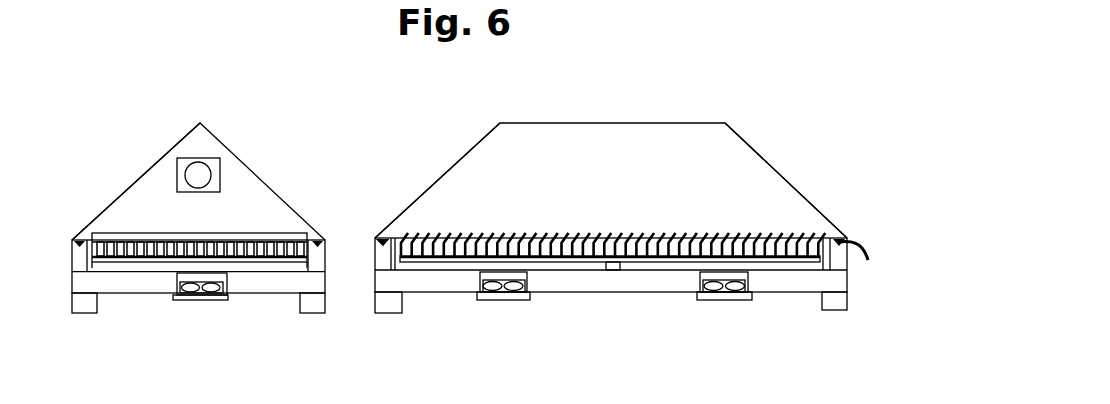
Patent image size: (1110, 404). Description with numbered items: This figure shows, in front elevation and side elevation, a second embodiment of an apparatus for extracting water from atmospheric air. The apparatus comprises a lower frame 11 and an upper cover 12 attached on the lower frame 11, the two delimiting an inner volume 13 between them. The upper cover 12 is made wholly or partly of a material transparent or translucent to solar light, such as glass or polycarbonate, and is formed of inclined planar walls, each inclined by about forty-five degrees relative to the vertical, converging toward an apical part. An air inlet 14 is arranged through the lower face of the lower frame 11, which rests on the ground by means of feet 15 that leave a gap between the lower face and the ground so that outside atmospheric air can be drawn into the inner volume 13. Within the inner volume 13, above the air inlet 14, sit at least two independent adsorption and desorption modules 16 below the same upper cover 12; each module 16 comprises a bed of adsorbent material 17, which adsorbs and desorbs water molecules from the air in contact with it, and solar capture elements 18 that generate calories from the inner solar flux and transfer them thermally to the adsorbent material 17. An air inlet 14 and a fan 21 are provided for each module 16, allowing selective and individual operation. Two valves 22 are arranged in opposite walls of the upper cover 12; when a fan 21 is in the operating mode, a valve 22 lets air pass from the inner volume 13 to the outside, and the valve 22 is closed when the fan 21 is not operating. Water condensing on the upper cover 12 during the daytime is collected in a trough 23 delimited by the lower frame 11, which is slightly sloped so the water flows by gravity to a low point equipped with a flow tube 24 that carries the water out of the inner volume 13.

The lower frame 11 is at (80, 252).
The upper cover 12 is at (168, 143).
The inner volume 13 is at (133, 179).
The air inlet 14 is at (183, 305).
The feet 15 is at (82, 303).
The adsorption and desorption module 16 is at (470, 228).
The adsorbent material 17 is at (257, 247).
The solar capture elements 18 is at (230, 237).
The fan 21 is at (212, 290).
The valve 22 is at (197, 170).
The trough 23 is at (380, 243).
The flow tube 24 is at (868, 247).